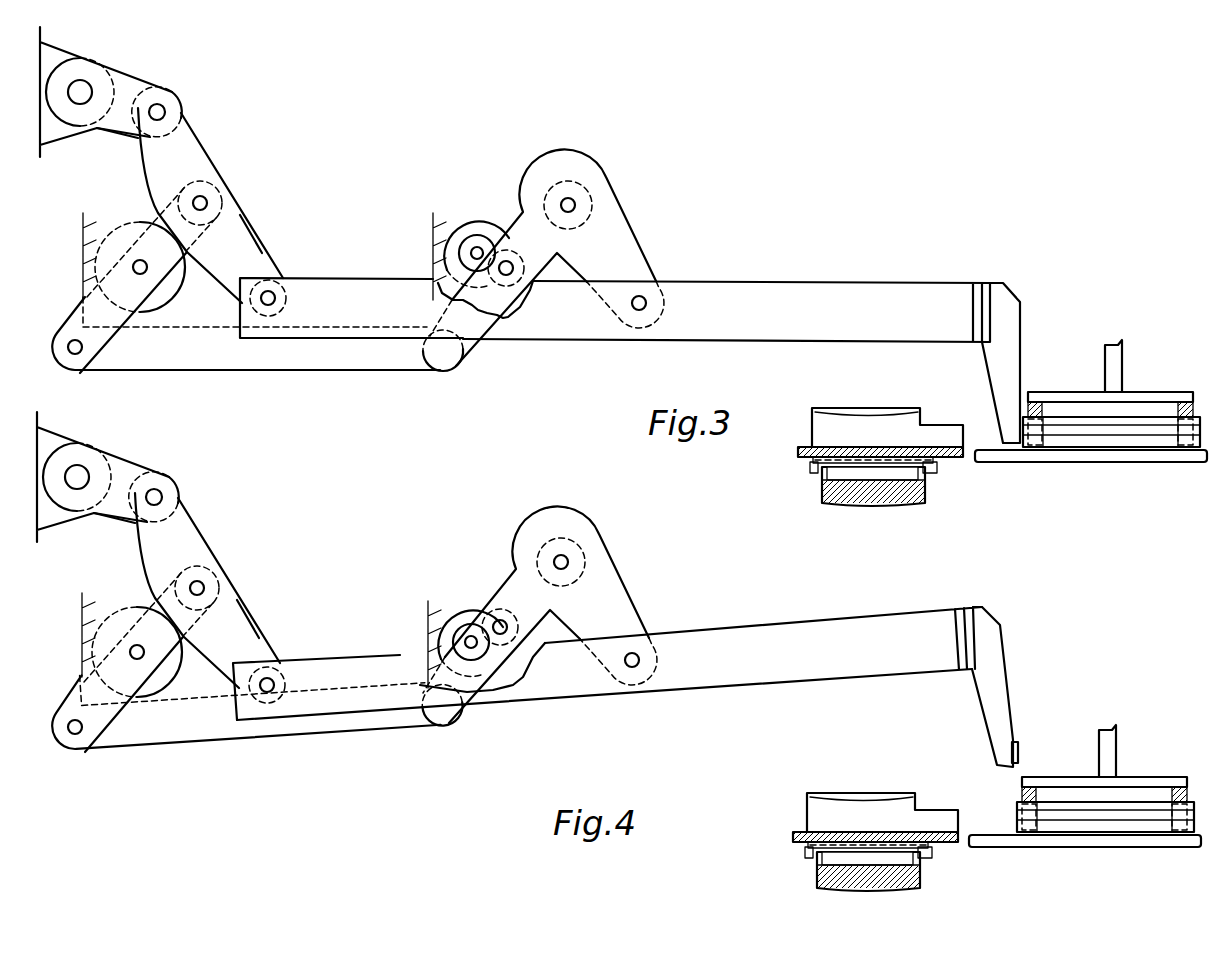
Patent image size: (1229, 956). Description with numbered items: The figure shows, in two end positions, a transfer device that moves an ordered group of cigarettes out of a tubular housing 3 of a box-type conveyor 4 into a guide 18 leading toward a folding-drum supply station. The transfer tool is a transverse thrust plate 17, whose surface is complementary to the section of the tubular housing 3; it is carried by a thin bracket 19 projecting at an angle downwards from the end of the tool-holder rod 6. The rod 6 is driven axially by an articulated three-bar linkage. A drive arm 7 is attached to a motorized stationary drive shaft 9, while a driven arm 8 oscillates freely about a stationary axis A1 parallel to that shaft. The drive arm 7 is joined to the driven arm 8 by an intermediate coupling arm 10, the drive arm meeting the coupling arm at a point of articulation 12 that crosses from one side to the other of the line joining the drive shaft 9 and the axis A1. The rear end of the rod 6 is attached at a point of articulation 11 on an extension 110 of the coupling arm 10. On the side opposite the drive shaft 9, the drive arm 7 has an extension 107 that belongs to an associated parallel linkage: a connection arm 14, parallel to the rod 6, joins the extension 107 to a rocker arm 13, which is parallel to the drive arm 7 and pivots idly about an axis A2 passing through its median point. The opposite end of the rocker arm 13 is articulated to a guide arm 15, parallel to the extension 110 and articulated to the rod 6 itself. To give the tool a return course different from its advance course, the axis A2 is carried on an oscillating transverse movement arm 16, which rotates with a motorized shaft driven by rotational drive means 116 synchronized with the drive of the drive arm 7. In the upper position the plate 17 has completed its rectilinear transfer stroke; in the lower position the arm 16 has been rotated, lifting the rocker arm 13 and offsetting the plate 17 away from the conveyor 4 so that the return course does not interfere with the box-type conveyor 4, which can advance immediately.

In FIG. 3, the stationary axis A1 is at (84, 88).
In FIG. 4, the stationary axis A1 is at (97, 467).
In FIG. 3, the driven arm 8 is at (138, 88).
In FIG. 4, the driven arm 8 is at (143, 484).
In FIG. 3, the intermediate coupling arm 10 is at (197, 143).
In FIG. 4, the intermediate coupling arm 10 is at (207, 589).
In FIG. 3, the extension of the intermediate coupling arm 110 is at (253, 226).
In FIG. 4, the extension of the intermediate coupling arm 110 is at (283, 619).
In FIG. 3, the point of articulation 12 is at (206, 198).
In FIG. 4, the point of articulation 12 is at (228, 576).
In FIG. 3, the drive arm 7 is at (145, 228).
In FIG. 4, the drive arm 7 is at (148, 614).
In FIG. 3, the drive shaft 9 is at (133, 262).
In FIG. 4, the drive shaft 9 is at (135, 638).
In FIG. 3, the point of articulation 11 is at (275, 292).
In FIG. 4, the point of articulation 11 is at (273, 680).
In FIG. 3, the extension of the drive arm 107 is at (108, 343).
In FIG. 4, the extension of the drive arm 107 is at (105, 720).
In FIG. 3, the connection arm 14 is at (285, 367).
In FIG. 4, the connection arm 14 is at (223, 733).
In FIG. 3, the rocker arm 13 is at (510, 220).
In FIG. 4, the rocker arm 13 is at (508, 577).
In FIG. 3, the guide arm 15 is at (633, 233).
In FIG. 4, the guide arm 15 is at (613, 583).
In FIG. 3, the transverse movement arm 16 is at (480, 243).
In FIG. 4, the transverse movement arm 16 is at (473, 624).
In FIG. 3, the motorized rotational drive means 116 is at (463, 228).
In FIG. 4, the motorized rotational drive means 116 is at (455, 616).
In FIG. 3, the axis of pivoting A2 is at (506, 275).
In FIG. 4, the axis of pivoting A2 is at (500, 634).
In FIG. 3, the tool-holder rod 6 is at (737, 285).
In FIG. 4, the tool-holder rod 6 is at (768, 625).
In FIG. 3, the thin bracket 19 is at (1013, 348).
In FIG. 4, the thin bracket 19 is at (1000, 698).
In FIG. 4, the transverse thrust plate 17 is at (1020, 754).
In FIG. 3, the guide 18 is at (1112, 460).
In FIG. 4, the guide 18 is at (1090, 850).
In FIG. 3, the tubular housing 3 is at (882, 408).
In FIG. 4, the tubular housing 3 is at (868, 792).
In FIG. 3, the conveyor 4 is at (807, 475).
In FIG. 4, the conveyor 4 is at (792, 843).